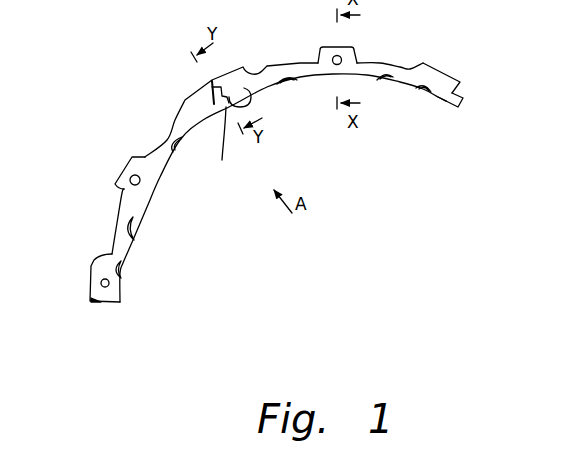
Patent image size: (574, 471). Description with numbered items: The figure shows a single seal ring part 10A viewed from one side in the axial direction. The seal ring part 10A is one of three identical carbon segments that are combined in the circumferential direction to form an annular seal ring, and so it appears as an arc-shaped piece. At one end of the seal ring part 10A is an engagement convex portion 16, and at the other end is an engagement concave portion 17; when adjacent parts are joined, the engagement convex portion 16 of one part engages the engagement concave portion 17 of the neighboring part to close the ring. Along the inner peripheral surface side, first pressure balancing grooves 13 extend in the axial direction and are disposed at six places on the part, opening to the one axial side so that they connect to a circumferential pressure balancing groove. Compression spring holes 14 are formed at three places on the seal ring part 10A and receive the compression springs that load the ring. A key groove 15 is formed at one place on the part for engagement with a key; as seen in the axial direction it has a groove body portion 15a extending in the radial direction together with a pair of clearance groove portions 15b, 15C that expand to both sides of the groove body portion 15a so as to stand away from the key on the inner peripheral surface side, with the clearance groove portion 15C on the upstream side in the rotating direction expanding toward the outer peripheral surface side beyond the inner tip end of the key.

The seal ring part 10A is at (140, 65).
The first pressure balancing groove 13 is at (283, 85).
The compression spring hole 14 is at (138, 175).
The key groove 15 is at (212, 102).
The groove body portion 15a is at (212, 80).
The clearance groove portion 15b is at (231, 144).
The clearance groove portion 15C is at (252, 88).
The engagement convex portion 16 is at (460, 98).
The engagement concave portion 17 is at (102, 306).